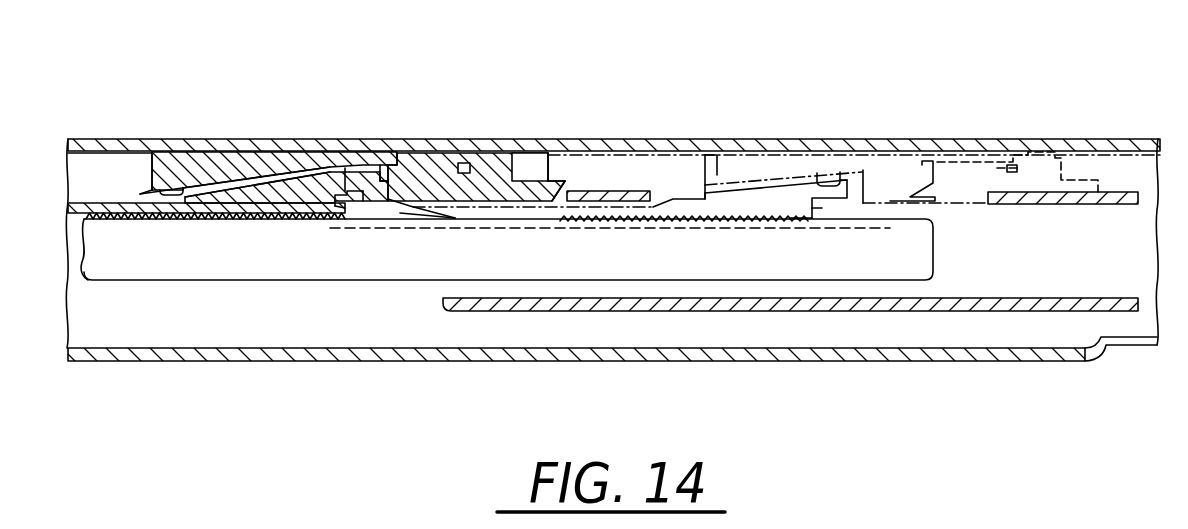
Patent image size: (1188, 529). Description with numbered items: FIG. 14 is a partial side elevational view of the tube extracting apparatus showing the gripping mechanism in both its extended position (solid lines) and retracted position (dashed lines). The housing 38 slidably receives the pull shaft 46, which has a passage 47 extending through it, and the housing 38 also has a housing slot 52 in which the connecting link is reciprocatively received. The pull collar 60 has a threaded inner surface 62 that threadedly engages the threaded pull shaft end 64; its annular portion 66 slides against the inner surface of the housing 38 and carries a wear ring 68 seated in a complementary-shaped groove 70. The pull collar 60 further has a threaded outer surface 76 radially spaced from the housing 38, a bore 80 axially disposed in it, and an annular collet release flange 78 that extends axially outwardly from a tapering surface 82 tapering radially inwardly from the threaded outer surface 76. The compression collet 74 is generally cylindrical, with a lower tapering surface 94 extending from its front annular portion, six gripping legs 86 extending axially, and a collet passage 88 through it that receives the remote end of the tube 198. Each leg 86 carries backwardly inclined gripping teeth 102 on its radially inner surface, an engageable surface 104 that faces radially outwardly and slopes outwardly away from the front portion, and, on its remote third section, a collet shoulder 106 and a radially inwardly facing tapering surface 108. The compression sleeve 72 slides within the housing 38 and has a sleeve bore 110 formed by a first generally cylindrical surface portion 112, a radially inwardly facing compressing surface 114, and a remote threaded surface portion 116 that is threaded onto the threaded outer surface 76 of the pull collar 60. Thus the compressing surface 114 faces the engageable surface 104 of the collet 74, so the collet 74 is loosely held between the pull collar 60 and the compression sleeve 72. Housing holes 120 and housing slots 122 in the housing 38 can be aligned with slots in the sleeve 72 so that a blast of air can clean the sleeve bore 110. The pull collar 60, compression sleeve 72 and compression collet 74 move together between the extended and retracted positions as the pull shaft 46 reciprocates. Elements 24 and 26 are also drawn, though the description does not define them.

The tubular member 24 is at (833, 110).
The tubular member 26 is at (307, 89).
The housing 38 is at (1017, 361).
The pull shaft 46 is at (461, 303).
The passage 47 is at (531, 300).
The housing slot 52 is at (1122, 350).
The pull collar 60 is at (447, 163).
The threaded inner surface 62 is at (562, 192).
The threaded pull shaft end 64 is at (606, 192).
The annular portion 66 is at (516, 171).
The wear ring 68 is at (496, 165).
The groove 70 is at (486, 158).
The compression sleeve 72 is at (181, 165).
The compression collet 74 is at (245, 190).
The threaded outer surface 76 is at (405, 153).
The collet release flange 78 is at (358, 198).
The bore 80 is at (397, 215).
The tapering surface 82 is at (359, 160).
The gripping legs 86 is at (292, 218).
The collet passage 88 is at (66, 262).
The lower tapering surface 94 is at (400, 215).
The gripping teeth 102 is at (235, 213).
The engageable surface 104 is at (240, 165).
The collet shoulder 106 is at (350, 208).
The tapering surface 108 is at (367, 203).
The sleeve bore 110 is at (141, 195).
The first generally cylindrical surface portion 112 is at (172, 190).
The compressing surface 114 is at (252, 184).
The remote threaded surface portion 116 is at (428, 160).
The housing holes 120 is at (127, 139).
The housing slots 122 is at (337, 139).
The tube 198 is at (161, 283).